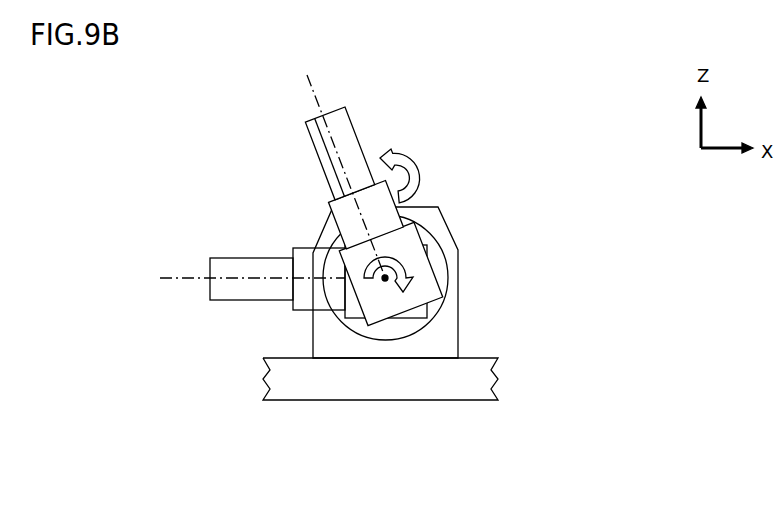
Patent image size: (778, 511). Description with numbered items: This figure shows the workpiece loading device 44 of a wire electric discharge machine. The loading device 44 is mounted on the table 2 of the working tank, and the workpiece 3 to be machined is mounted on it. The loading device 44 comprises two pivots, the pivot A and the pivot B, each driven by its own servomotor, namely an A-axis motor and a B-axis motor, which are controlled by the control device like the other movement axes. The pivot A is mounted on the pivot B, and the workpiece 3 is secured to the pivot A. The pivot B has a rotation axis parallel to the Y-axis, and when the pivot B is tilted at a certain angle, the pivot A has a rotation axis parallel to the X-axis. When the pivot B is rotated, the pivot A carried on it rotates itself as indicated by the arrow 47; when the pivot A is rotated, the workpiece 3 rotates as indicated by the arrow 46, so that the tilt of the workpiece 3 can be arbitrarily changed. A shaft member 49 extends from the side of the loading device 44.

The table 2 is at (438, 385).
The workpiece 3 is at (357, 130).
The loading device 44 is at (461, 315).
The arrow 46 is at (420, 175).
The arrow 47 is at (404, 266).
The drive shaft 49 is at (210, 298).
The pivot A is at (323, 113).
The pivot B is at (385, 280).